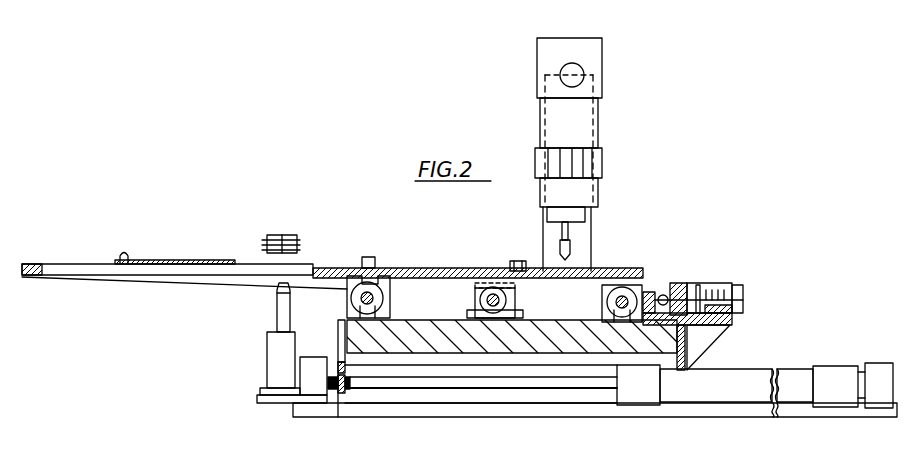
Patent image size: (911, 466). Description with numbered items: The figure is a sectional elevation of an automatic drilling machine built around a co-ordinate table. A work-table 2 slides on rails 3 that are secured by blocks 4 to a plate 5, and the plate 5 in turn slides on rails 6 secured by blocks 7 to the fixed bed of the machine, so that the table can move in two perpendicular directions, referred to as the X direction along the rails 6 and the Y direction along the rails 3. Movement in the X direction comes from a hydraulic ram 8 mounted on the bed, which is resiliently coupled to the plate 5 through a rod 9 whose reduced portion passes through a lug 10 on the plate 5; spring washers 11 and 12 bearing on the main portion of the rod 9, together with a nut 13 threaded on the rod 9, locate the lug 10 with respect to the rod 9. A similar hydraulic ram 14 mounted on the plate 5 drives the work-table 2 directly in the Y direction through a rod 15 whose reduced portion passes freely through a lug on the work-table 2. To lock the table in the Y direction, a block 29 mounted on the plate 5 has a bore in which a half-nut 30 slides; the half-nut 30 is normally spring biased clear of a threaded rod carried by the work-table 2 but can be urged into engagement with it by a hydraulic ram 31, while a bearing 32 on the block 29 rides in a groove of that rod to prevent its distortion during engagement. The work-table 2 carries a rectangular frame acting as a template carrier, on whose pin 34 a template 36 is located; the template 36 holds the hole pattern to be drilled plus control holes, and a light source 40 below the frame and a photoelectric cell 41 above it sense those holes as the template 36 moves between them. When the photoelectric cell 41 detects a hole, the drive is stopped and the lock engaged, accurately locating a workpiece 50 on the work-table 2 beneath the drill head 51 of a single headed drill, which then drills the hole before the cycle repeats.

The work-table 2 is at (458, 268).
The rails 3 is at (374, 298).
The blocks 4 is at (391, 318).
The plate 5 is at (435, 336).
The rails 6 is at (470, 368).
The blocks 7 is at (302, 357).
The hydraulic ram 8 is at (713, 378).
The rod 9 is at (563, 385).
The lug 10 is at (338, 327).
The spring washer 11 is at (346, 389).
The spring washer 12 is at (336, 392).
The nut 13 is at (314, 376).
The hydraulic ram 14 is at (506, 300).
The rod 15 is at (476, 297).
The block 29 is at (684, 328).
The half-nut 30 is at (682, 288).
The hydraulic ram 31 is at (743, 298).
The bearing 32 is at (652, 292).
The pin 34 is at (133, 246).
The template 36 is at (183, 260).
The light source 40 is at (277, 309).
The photoelectric cell 41 is at (270, 236).
The workpiece 50 is at (406, 266).
The drill head 51 is at (580, 213).